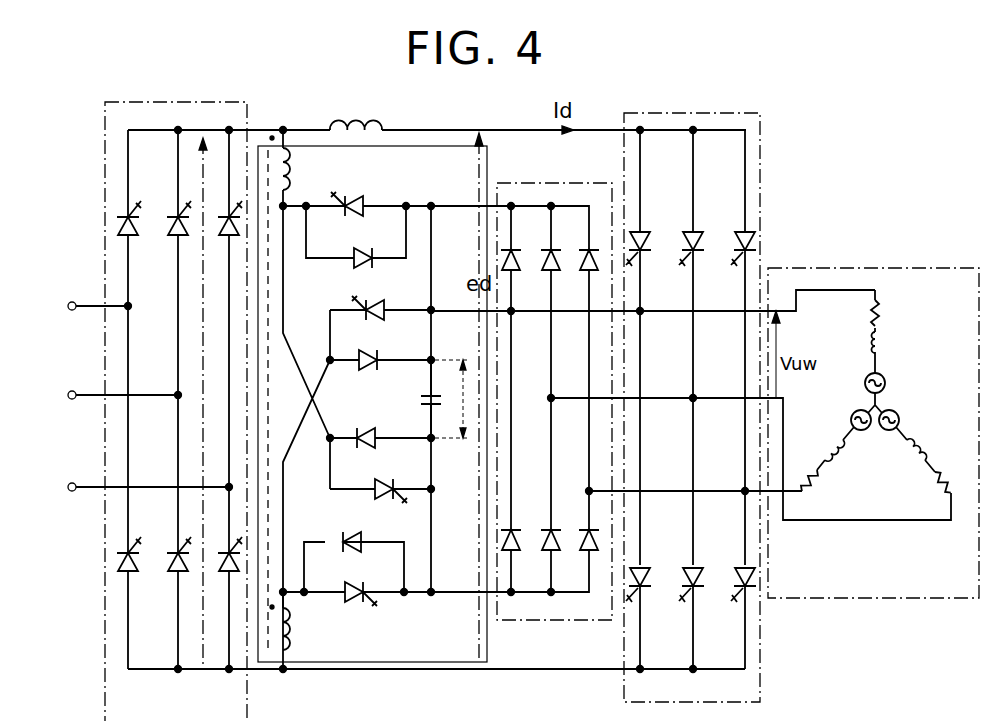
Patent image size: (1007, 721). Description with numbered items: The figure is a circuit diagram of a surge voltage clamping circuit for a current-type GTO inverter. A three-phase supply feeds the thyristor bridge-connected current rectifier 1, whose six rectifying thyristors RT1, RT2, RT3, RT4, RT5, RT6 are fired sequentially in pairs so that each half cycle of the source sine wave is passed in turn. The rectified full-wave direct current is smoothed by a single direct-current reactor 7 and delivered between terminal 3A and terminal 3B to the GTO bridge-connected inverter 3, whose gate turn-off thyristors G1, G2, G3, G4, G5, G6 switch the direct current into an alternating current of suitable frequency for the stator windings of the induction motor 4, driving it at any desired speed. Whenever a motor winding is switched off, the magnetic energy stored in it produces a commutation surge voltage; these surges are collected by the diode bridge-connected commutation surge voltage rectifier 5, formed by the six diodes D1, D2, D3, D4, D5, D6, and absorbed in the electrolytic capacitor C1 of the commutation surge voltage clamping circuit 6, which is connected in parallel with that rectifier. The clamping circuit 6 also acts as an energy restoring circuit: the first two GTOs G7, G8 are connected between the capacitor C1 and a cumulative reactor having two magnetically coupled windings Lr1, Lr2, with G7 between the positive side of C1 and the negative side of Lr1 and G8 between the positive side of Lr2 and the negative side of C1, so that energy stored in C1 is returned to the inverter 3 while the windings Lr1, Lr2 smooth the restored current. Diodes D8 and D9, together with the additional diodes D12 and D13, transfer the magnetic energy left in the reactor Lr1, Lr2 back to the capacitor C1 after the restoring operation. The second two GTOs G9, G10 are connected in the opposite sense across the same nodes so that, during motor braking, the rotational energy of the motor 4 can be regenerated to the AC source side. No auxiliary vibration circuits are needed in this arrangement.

The thyristor bridge-connected current rectifier 1 is at (176, 102).
The GTO bridge-connected inverter 3 is at (698, 113).
The terminal 3A is at (592, 130).
The terminal 3B is at (538, 672).
The induction motor 4 is at (897, 268).
The diode bridge-connected commutation surge voltage rectifier 5 is at (558, 183).
The commutation surge voltage clamping circuit 6 is at (410, 147).
The direct-current reactor 7 is at (350, 112).
The rectifying thyristor RT1 is at (114, 224).
The rectifying thyristor RT2 is at (112, 563).
The rectifying thyristor RT3 is at (172, 229).
The rectifying thyristor RT4 is at (163, 567).
The rectifying thyristor RT5 is at (225, 235).
The rectifying thyristor RT6 is at (223, 570).
The GTO G1 is at (642, 240).
The inverter thyristor G2 is at (640, 567).
The GTO G3 is at (695, 240).
The inverter thyristor G4 is at (694, 567).
The inverter thyristor G5 is at (748, 236).
The GTO G6 is at (745, 567).
The first GTO G7 is at (356, 203).
The second GTO G8 is at (353, 603).
The third GTO G9 is at (380, 307).
The fourth GTO G10 is at (384, 499).
The diode D1 is at (521, 276).
The diode D2 is at (521, 557).
The diode D3 is at (560, 276).
The diode D4 is at (560, 557).
The diode D5 is at (599, 276).
The diode D6 is at (598, 557).
The first diode D8 is at (378, 358).
The second diode D9 is at (372, 446).
The third diode D12 is at (359, 252).
The fourth diode D13 is at (348, 533).
The electrolytic capacitor C1 is at (420, 400).
The first winding Lr1 is at (292, 176).
The second winding Lr2 is at (293, 642).